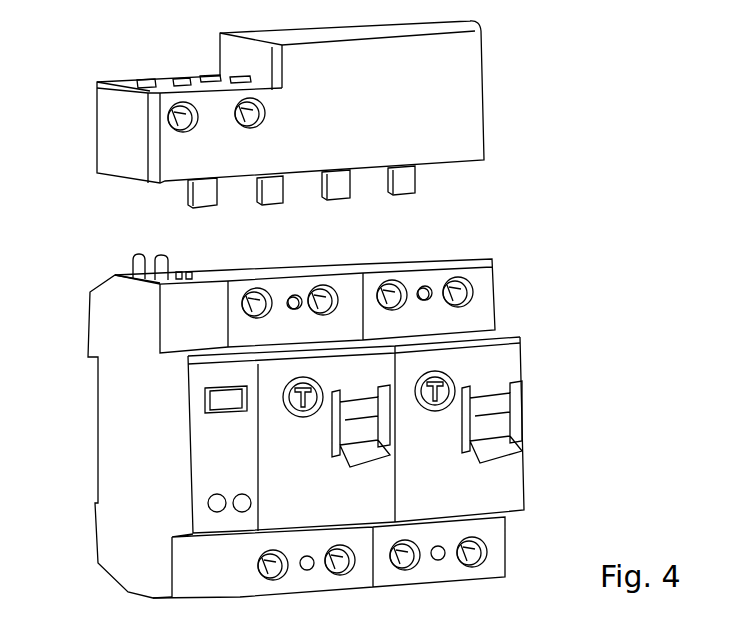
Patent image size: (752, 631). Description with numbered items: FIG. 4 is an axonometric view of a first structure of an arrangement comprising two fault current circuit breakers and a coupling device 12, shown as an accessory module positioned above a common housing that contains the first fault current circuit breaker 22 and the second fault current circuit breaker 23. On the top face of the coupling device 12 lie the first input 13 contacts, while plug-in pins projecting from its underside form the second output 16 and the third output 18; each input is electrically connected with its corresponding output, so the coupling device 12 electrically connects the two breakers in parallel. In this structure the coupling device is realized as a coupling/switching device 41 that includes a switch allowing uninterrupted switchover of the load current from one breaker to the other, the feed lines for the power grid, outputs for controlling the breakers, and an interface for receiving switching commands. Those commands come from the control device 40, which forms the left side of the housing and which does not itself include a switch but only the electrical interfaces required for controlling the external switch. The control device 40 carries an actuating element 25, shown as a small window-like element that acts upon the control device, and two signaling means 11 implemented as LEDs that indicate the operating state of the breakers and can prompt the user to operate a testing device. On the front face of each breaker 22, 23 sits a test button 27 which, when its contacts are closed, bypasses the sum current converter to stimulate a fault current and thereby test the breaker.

The signaling means 11 is at (215, 500).
The coupling device 12 is at (332, 102).
The coupling/switching device 41 is at (467, 125).
The first input 13 is at (200, 72).
The second output 16 is at (207, 197).
The third output 18 is at (343, 187).
The first fault current circuit breaker 22 is at (308, 282).
The second fault current circuit breaker 23 is at (507, 363).
The actuating element 25 is at (230, 400).
The test button 27 is at (290, 395).
The control device 40 is at (108, 425).